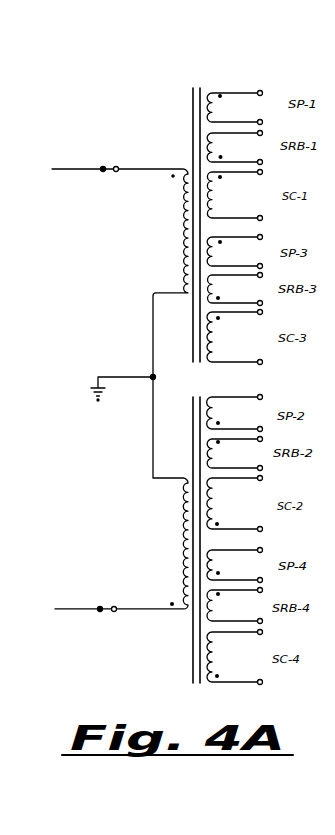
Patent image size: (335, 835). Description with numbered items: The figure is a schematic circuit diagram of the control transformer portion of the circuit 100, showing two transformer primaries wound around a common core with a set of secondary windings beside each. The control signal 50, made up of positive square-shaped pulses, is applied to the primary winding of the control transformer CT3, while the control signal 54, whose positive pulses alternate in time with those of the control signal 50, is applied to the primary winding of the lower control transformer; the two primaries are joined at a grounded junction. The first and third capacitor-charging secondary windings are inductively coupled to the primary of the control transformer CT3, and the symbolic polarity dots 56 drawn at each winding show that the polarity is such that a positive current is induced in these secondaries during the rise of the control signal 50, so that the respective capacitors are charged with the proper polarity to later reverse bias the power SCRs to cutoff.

The system 100 is at (7, 91).
The control signal 50 is at (88, 168).
The control signal 54 is at (83, 609).
The polarity dots 56 is at (173, 178).
The control transformer CT3 is at (108, 389).